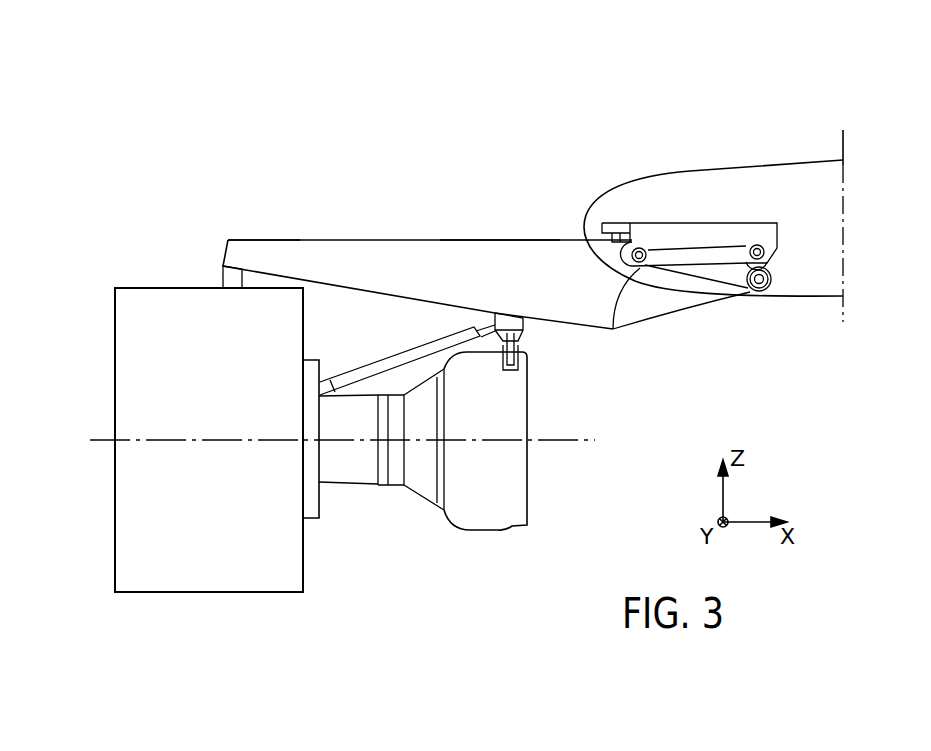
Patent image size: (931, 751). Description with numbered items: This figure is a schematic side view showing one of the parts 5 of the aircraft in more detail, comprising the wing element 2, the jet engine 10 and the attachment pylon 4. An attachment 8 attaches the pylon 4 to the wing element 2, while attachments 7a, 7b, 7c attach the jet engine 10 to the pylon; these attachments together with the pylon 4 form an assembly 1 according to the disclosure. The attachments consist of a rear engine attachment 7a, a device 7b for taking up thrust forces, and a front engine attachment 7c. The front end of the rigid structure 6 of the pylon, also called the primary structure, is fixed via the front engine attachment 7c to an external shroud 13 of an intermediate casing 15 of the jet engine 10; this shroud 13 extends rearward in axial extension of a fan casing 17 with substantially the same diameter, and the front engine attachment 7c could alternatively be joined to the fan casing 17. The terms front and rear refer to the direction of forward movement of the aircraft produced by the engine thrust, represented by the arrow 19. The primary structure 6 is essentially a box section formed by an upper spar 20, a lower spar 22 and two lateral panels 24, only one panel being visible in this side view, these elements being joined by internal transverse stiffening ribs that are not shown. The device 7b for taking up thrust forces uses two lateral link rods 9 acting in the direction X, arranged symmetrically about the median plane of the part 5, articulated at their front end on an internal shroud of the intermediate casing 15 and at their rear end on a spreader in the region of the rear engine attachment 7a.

The assembly 1 is at (562, 218).
The wing element 2 is at (790, 173).
The attachment pylon 4 is at (394, 195).
The part 5 is at (286, 106).
The rigid structure 6 is at (338, 250).
The rear engine attachment 7a is at (528, 322).
The device for taking up thrust forces 7b is at (370, 348).
The front engine attachment 7c is at (228, 280).
The attachment 8 is at (757, 250).
The lateral link rods 9 is at (330, 388).
The jet engine 10 is at (137, 652).
The external shroud 13 is at (235, 307).
The intermediate casing 15 is at (286, 607).
The fan casing 17 is at (124, 302).
The arrow 19 is at (454, 98).
The upper spar 20 is at (507, 240).
The lower spar 22 is at (600, 332).
The lateral panels 24 is at (290, 250).